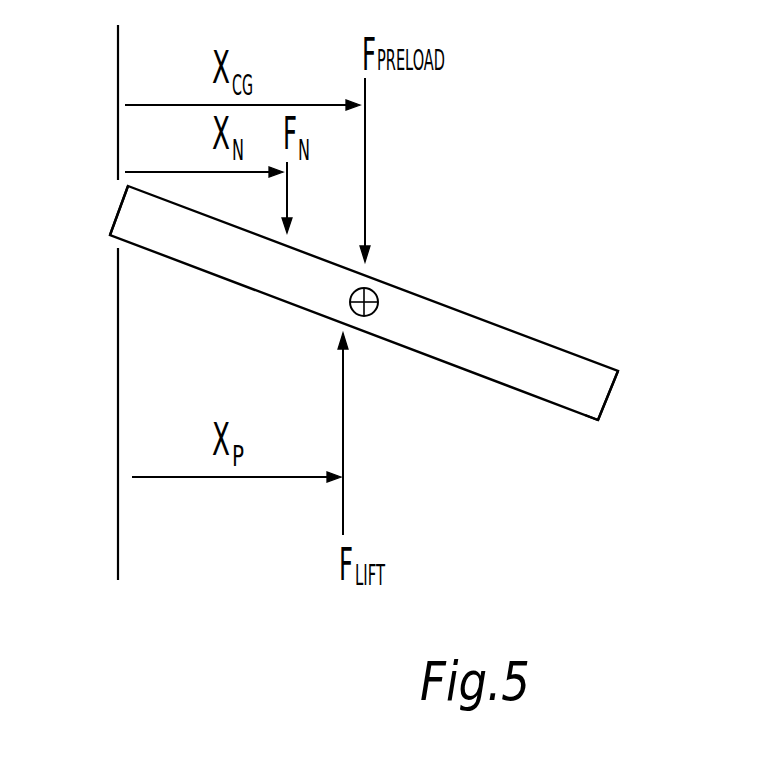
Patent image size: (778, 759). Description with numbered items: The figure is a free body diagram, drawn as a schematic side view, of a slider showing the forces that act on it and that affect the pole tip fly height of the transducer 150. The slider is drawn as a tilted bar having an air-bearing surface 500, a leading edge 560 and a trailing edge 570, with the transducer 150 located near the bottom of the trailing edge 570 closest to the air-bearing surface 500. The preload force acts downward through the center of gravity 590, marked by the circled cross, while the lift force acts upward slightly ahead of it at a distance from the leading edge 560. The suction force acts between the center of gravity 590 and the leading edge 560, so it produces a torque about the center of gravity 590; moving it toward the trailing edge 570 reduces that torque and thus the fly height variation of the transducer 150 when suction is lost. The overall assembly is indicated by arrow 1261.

The air-bearing surface 500 is at (498, 383).
The leading edge 560 is at (115, 208).
The trailing edge 570 is at (610, 396).
The transducer 150 is at (598, 421).
The center of gravity 590 is at (373, 291).
The force diagram 1261 is at (568, 280).